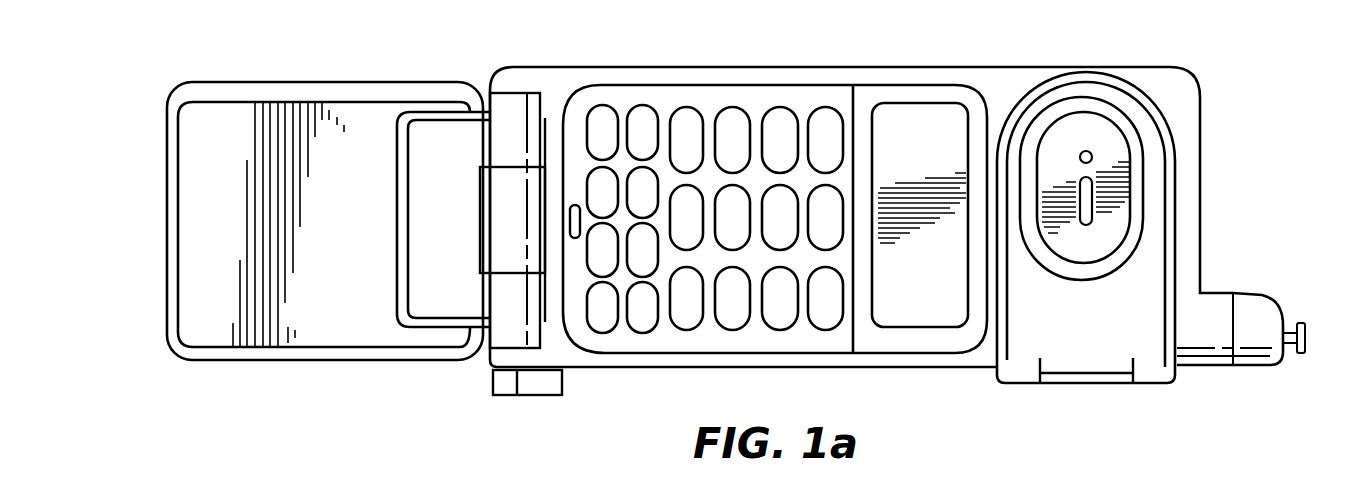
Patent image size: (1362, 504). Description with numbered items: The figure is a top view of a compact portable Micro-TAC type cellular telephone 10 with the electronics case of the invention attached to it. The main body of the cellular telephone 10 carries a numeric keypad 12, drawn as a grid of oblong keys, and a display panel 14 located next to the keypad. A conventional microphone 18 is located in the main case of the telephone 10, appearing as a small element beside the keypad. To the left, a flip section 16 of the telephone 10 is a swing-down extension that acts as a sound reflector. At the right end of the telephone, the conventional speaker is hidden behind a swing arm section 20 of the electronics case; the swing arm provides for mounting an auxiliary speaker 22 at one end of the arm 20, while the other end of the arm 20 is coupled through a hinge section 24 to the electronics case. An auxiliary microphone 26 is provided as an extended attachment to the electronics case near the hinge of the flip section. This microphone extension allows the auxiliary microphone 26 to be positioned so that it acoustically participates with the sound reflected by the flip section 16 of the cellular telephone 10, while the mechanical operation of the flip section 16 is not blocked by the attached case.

The cellular telephone 10 is at (940, 55).
The numeric keypad 12 is at (707, 120).
The display panel 14 is at (908, 305).
The flip section 16 is at (388, 327).
The microphone 18 is at (578, 220).
The swing arm section 20 is at (1123, 322).
The auxiliary speaker 22 is at (1108, 220).
The hinge section 24 is at (1067, 383).
The auxiliary microphone 26 is at (527, 387).